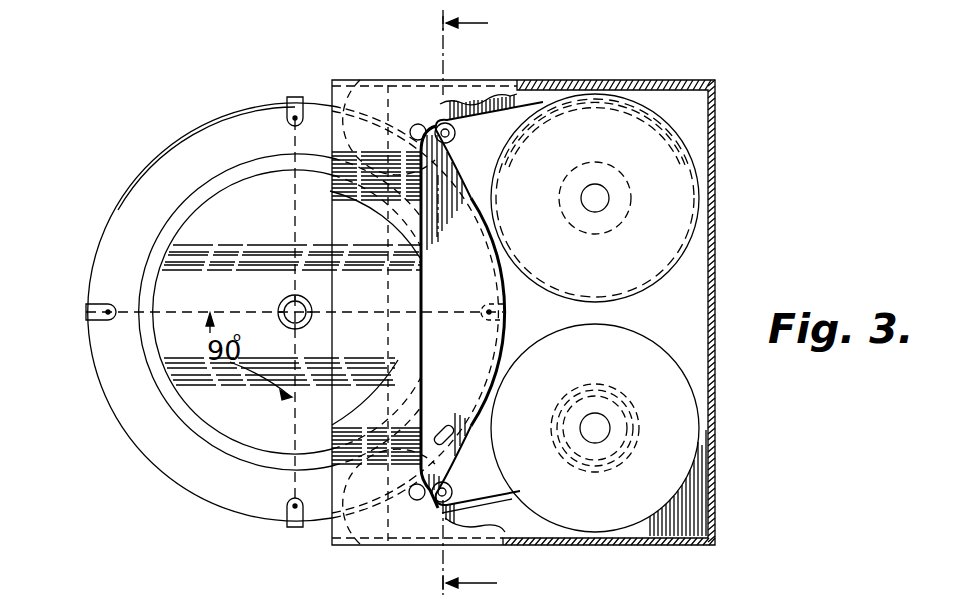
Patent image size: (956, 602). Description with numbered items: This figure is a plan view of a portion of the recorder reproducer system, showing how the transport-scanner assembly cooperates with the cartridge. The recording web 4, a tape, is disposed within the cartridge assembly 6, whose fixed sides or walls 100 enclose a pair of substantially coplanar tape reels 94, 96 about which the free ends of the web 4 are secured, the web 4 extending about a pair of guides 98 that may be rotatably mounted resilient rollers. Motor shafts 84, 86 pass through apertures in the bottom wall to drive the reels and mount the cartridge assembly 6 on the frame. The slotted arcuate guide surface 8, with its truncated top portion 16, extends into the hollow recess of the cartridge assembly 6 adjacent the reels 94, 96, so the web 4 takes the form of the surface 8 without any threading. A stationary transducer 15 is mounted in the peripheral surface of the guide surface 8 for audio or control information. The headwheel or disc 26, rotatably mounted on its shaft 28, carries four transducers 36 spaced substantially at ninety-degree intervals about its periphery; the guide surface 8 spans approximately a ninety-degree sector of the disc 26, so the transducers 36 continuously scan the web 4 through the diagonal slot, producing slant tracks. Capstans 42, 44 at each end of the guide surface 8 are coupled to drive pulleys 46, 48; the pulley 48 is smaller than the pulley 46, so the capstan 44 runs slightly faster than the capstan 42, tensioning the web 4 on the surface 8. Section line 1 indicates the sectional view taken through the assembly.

The section line 1 is at (483, 306).
The web like record medium 4 is at (526, 92).
The cartridge assembly 6 is at (578, 80).
The arcuate guide surface 8 is at (470, 185).
The stationary transducer 15 is at (452, 426).
The truncated top portion 16 is at (462, 252).
The headwheel 26 is at (177, 164).
The shaft 28 is at (305, 326).
The transducers 36 is at (294, 97).
The capstan 42 is at (417, 500).
The capstan 44 is at (417, 126).
The drive pulley 46 is at (360, 544).
The drive pulley 48 is at (360, 80).
The motor shaft 84 is at (600, 432).
The motor shaft 86 is at (600, 203).
The tape reel 94 is at (605, 517).
The tape reel 96 is at (613, 130).
The guides 98 is at (452, 490).
The fixed sides 100 is at (709, 246).